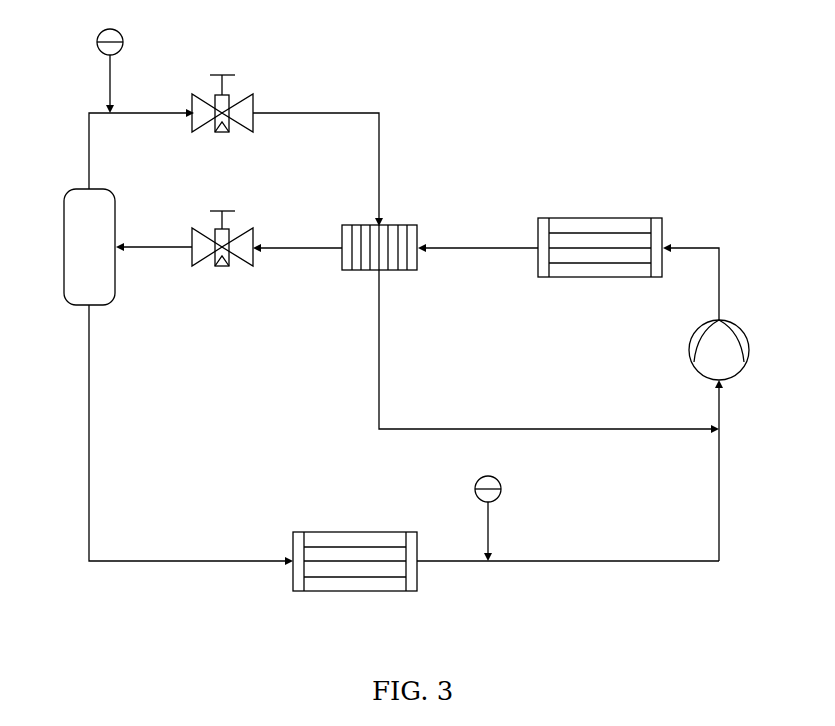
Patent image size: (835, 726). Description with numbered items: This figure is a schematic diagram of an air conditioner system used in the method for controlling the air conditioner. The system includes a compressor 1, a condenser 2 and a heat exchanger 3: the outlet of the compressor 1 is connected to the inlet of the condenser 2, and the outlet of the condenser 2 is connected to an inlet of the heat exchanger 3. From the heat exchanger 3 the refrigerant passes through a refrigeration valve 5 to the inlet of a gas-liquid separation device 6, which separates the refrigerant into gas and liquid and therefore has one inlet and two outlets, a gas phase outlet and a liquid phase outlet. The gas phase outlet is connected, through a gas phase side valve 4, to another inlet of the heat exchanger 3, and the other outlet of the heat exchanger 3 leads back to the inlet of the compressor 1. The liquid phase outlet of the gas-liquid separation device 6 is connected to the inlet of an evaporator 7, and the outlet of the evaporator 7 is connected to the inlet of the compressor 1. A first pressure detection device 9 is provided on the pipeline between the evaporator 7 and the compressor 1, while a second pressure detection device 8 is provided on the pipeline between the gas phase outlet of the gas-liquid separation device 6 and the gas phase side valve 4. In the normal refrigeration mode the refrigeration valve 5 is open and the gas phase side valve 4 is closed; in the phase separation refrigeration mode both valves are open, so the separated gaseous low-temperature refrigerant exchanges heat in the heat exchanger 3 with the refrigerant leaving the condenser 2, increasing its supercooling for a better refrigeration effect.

The compressor 1 is at (739, 365).
The condenser 2 is at (600, 222).
The heat exchanger 3 is at (382, 273).
The gas phase side valve 4 is at (222, 78).
The refrigeration valve 5 is at (222, 220).
The gas-liquid separation device 6 is at (66, 247).
The evaporator 7 is at (355, 541).
The second pressure detection device 8 is at (95, 70).
The first pressure detection device 9 is at (503, 517).